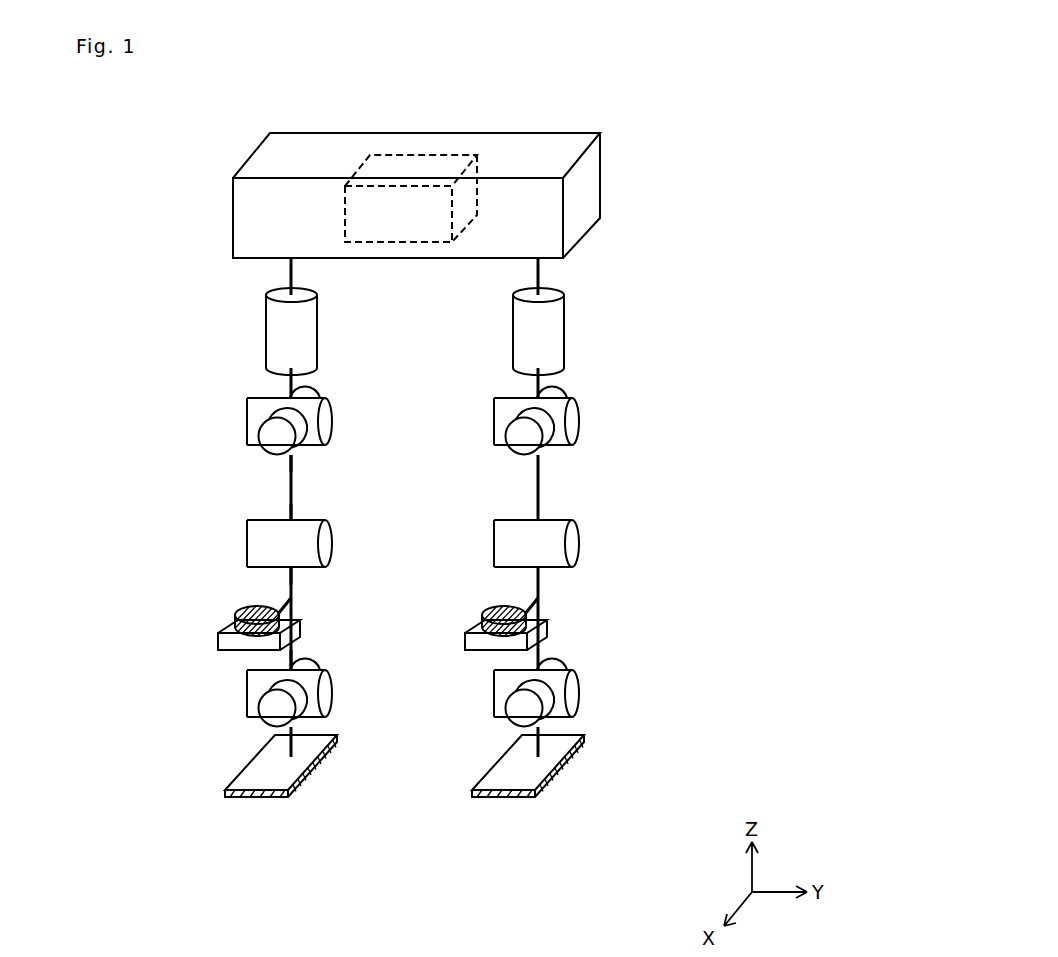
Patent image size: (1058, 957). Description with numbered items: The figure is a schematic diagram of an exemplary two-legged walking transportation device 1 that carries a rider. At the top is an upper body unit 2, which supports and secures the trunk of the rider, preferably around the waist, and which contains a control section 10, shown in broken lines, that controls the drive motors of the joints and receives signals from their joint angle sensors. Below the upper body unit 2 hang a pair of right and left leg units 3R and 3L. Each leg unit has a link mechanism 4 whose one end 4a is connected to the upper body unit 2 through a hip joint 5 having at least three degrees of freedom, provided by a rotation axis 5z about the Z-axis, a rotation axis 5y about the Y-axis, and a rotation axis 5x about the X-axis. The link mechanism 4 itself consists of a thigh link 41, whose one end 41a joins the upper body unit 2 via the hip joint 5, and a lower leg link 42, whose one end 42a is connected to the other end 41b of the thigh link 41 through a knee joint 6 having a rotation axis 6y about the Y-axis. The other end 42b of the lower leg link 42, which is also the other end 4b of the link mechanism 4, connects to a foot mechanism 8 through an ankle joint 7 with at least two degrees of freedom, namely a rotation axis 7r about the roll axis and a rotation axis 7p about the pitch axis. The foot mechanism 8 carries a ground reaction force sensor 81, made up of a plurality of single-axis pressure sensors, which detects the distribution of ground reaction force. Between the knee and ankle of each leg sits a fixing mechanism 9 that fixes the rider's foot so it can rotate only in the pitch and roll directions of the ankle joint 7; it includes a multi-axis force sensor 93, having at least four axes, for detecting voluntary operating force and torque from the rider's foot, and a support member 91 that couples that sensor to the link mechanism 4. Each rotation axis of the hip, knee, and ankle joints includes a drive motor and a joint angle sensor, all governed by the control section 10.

The two-legged walking transportation device 1 is at (627, 72).
The upper body unit 2 is at (243, 219).
The control section 10 is at (390, 160).
The right leg unit 3R is at (141, 279).
The left leg unit 3L is at (660, 279).
The hip joint 5 is at (228, 292).
The rotation axis about the Z-axis 5z is at (560, 328).
The rotation axis about the Y-axis 5y is at (577, 423).
The rotation axis about the X-axis 5x is at (523, 445).
The link mechanism 4 is at (382, 450).
The thigh link 41 is at (292, 482).
The one end of the thigh link 41a is at (291, 462).
The one end of the link mechanism 4a is at (245, 469).
The other end of the thigh link 41b is at (291, 514).
The knee joint 6 is at (226, 508).
The rotation axis about the Y-axis 6y is at (577, 543).
The lower leg link 42 is at (292, 595).
The one end of the lower leg link 42a is at (291, 576).
The other end of the lower leg link 42b is at (292, 658).
The other end of the link mechanism 4b is at (336, 652).
The fixing mechanism 9 is at (222, 614).
The support member 91 is at (535, 603).
The multi-axis force sensor 93 is at (493, 610).
The ankle joint 7 is at (224, 663).
The rotation axis about the pitch axis 7p is at (575, 695).
The rotation axis about the roll axis 7r is at (518, 718).
The foot mechanism 8 is at (351, 728).
The ground reaction force sensor 81 is at (567, 763).